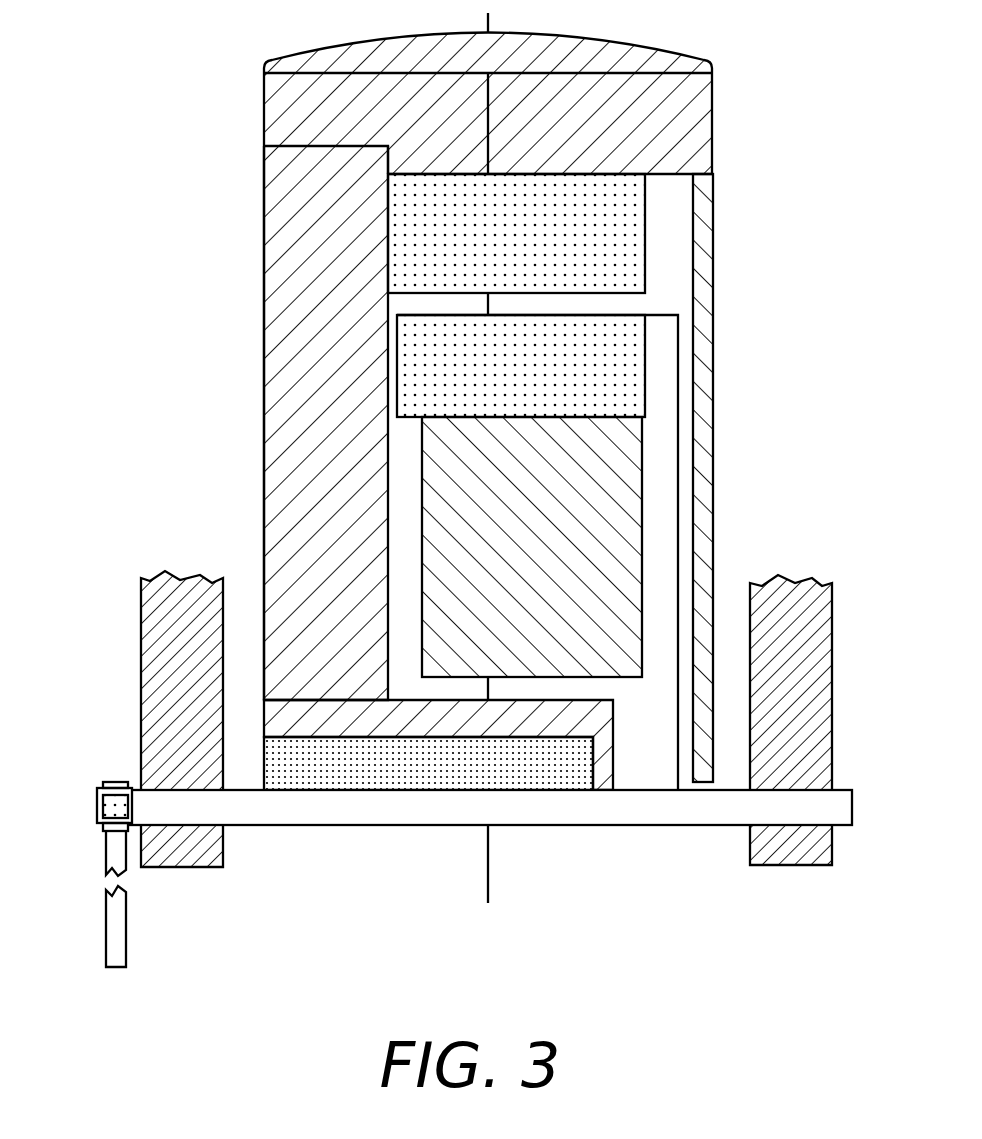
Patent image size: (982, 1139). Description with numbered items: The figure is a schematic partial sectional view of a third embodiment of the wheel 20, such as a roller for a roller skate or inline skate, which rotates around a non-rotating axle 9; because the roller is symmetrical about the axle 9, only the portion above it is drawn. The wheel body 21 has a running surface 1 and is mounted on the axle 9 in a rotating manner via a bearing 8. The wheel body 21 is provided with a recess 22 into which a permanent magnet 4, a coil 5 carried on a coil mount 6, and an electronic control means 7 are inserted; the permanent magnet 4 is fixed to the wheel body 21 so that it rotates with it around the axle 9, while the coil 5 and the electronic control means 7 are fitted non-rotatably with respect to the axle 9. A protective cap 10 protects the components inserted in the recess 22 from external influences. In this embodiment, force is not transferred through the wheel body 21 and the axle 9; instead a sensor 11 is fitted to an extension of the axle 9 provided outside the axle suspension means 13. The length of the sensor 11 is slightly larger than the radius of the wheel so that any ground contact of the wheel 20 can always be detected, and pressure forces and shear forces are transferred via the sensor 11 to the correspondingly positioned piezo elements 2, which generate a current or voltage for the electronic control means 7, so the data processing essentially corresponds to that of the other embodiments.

The running surface 1 is at (395, 120).
The piezo element 2 is at (117, 782).
The permanent magnet 4 is at (583, 240).
The coil 5 is at (620, 358).
The coil mount 6 is at (663, 465).
The electronic control means 7 is at (647, 565).
The bearing 8 is at (580, 800).
The axle 9 is at (252, 808).
The protective cap 10 is at (703, 498).
The sensor 11 is at (108, 837).
The axle suspension means 13 is at (180, 870).
The wheel 20 is at (233, 333).
The wheel body 21 is at (263, 228).
The recess 22 is at (687, 407).